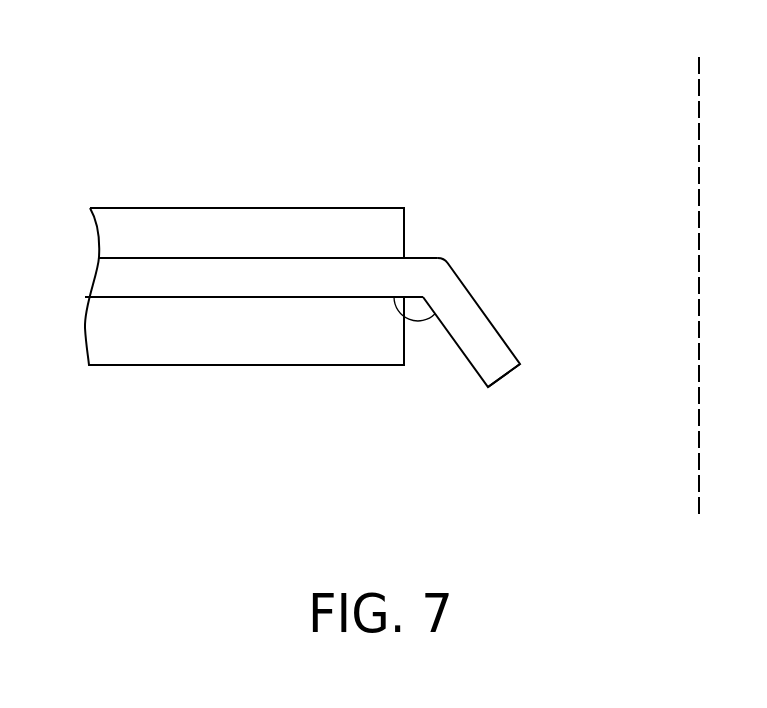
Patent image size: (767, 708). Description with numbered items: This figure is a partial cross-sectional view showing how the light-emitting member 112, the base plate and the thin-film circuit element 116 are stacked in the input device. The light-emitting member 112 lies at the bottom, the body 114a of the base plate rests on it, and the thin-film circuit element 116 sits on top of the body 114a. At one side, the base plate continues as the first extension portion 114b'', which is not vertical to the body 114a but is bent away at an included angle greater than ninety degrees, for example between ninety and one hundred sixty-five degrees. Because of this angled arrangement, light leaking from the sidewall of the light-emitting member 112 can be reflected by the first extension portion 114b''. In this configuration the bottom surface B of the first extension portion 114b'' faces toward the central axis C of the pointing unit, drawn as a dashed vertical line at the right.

The thin-film circuit element 116 is at (218, 225).
The body 114a is at (342, 270).
The light-emitting member 112 is at (268, 335).
The first extension portion 114b'' is at (538, 322).
The bottom surface B is at (503, 377).
The central axis C is at (700, 263).